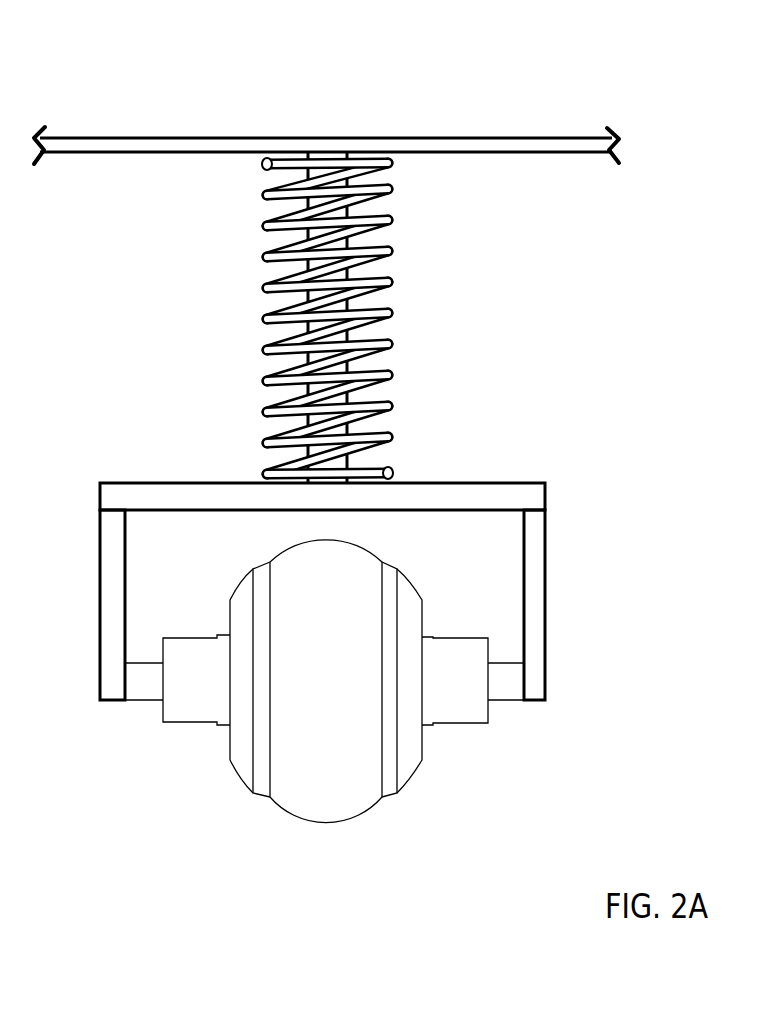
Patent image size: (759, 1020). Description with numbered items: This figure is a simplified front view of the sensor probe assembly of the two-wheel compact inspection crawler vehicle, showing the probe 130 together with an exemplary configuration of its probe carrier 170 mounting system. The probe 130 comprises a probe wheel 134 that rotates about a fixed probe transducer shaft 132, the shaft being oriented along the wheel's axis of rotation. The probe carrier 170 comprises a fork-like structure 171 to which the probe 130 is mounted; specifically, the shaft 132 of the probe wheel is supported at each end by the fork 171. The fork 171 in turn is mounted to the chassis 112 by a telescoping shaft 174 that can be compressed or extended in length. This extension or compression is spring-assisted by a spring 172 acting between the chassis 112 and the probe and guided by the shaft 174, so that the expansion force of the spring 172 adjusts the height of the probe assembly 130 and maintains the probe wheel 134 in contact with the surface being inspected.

The probe carrier 170 is at (248, 104).
The chassis 112 is at (70, 153).
The spring 172 is at (380, 364).
The telescoping shaft 174 is at (382, 464).
The fork-like structure 171 is at (545, 490).
The probe 130 is at (215, 594).
The probe transducer shaft 132 is at (502, 692).
The probe wheel 134 is at (348, 815).